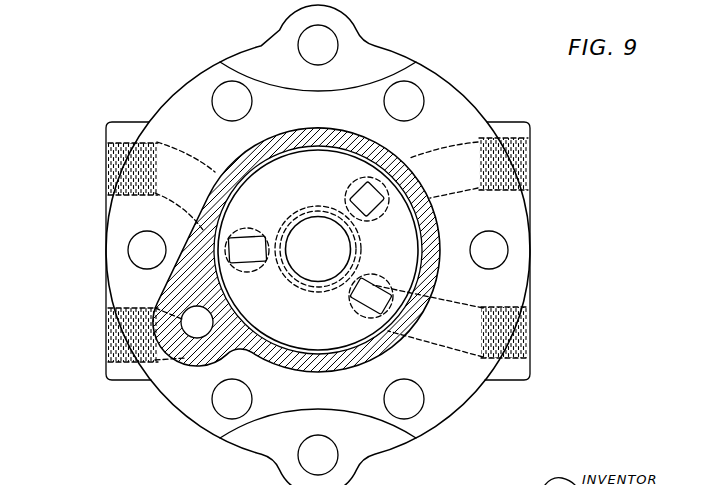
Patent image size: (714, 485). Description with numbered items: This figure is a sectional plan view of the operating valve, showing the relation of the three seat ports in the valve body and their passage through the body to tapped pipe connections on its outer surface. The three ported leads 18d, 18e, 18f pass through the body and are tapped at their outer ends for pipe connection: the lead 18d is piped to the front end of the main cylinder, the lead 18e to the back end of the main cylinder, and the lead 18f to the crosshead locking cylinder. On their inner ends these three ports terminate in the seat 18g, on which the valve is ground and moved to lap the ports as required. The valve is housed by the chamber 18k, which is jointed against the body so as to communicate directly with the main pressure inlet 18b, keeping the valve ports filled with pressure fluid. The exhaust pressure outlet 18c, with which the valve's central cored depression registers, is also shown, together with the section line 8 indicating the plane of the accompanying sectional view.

The section line 8- 8 is at (67, 300).
The chamber 18k is at (233, 150).
The seat 18g is at (318, 250).
The exhaust pressure outlet 18c is at (318, 249).
The main pressure inlet 18b is at (198, 337).
The ported lead 18d is at (358, 188).
The ported lead 18e is at (374, 287).
The ported lead 18f is at (252, 240).